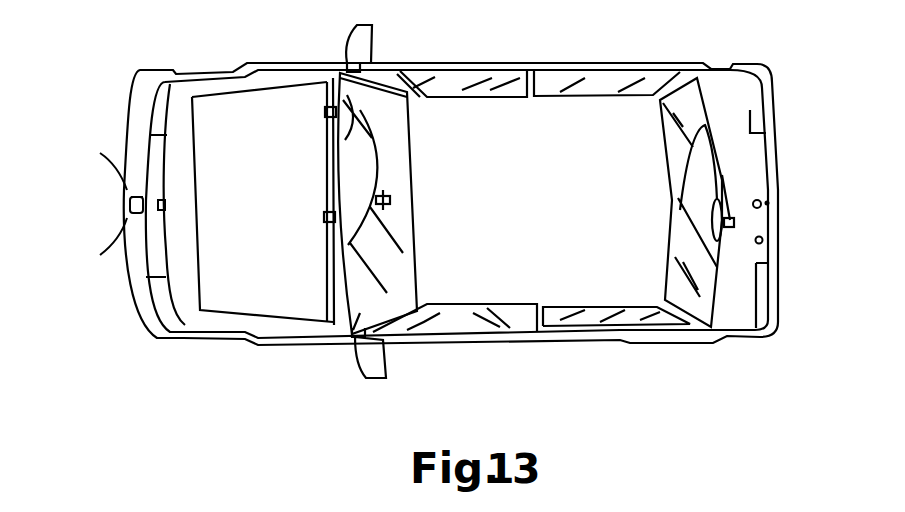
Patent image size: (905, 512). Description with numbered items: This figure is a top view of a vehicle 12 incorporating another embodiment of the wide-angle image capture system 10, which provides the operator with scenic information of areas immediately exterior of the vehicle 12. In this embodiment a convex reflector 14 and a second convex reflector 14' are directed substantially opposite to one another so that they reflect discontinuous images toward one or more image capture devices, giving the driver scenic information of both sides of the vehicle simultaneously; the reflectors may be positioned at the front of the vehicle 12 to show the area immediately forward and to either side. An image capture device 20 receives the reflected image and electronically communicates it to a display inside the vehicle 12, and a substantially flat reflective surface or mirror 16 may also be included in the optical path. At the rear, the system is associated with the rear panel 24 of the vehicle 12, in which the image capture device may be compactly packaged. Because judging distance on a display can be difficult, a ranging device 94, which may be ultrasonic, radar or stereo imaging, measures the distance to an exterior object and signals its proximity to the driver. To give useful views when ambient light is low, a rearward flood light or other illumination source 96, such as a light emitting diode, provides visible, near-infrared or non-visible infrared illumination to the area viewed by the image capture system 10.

The wide-angle image capture system 10 is at (754, 210).
The vehicle 12 is at (434, 67).
The convex reflector 14 is at (114, 223).
The second convex reflector 14' is at (88, 156).
The flat reflective surface or mirror 16 is at (723, 5).
The image capture device 20 is at (165, 205).
The rear panel 24 is at (737, 133).
The ranging device 94 is at (763, 239).
The illumination source 96 is at (768, 203).